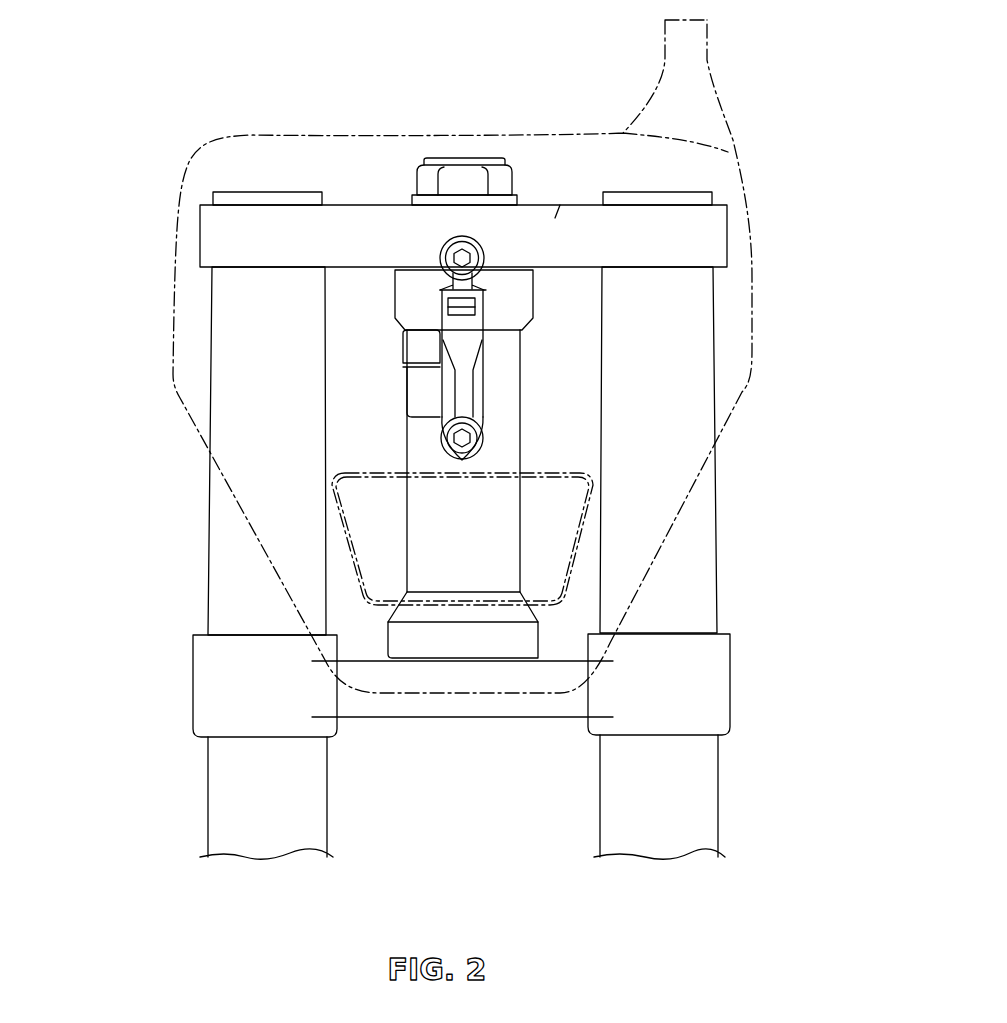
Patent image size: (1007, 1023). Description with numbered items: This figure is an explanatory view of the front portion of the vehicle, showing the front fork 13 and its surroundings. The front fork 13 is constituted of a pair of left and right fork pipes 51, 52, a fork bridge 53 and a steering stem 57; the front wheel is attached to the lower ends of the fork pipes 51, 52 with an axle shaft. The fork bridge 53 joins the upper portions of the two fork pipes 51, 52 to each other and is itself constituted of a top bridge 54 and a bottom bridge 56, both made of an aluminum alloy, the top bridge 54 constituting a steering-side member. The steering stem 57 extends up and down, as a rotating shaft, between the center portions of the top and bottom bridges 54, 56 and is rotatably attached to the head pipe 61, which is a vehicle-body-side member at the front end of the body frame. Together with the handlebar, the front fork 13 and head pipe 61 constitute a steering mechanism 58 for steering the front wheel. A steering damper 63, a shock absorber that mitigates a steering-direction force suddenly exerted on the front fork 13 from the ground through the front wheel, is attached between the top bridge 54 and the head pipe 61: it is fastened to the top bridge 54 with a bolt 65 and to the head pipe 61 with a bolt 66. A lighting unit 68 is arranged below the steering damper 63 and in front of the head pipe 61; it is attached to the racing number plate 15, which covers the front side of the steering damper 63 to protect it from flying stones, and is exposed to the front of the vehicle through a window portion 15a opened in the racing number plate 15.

The front fork 13 is at (206, 305).
The racing number plate 15 is at (172, 475).
The window portion 15a is at (368, 587).
The left fork pipe 51 is at (212, 797).
The right fork pipe 52 is at (703, 797).
The fork bridge 53 is at (357, 215).
The top bridge 54 is at (555, 218).
The bottom bridge 56 is at (205, 697).
The steering stem 57 is at (458, 158).
The steering mechanism 58 is at (724, 518).
The head pipe 61 is at (418, 453).
The steering damper 63 is at (397, 369).
The bolt 65 is at (478, 253).
The bolt 66 is at (483, 438).
The lighting unit 68 is at (566, 585).